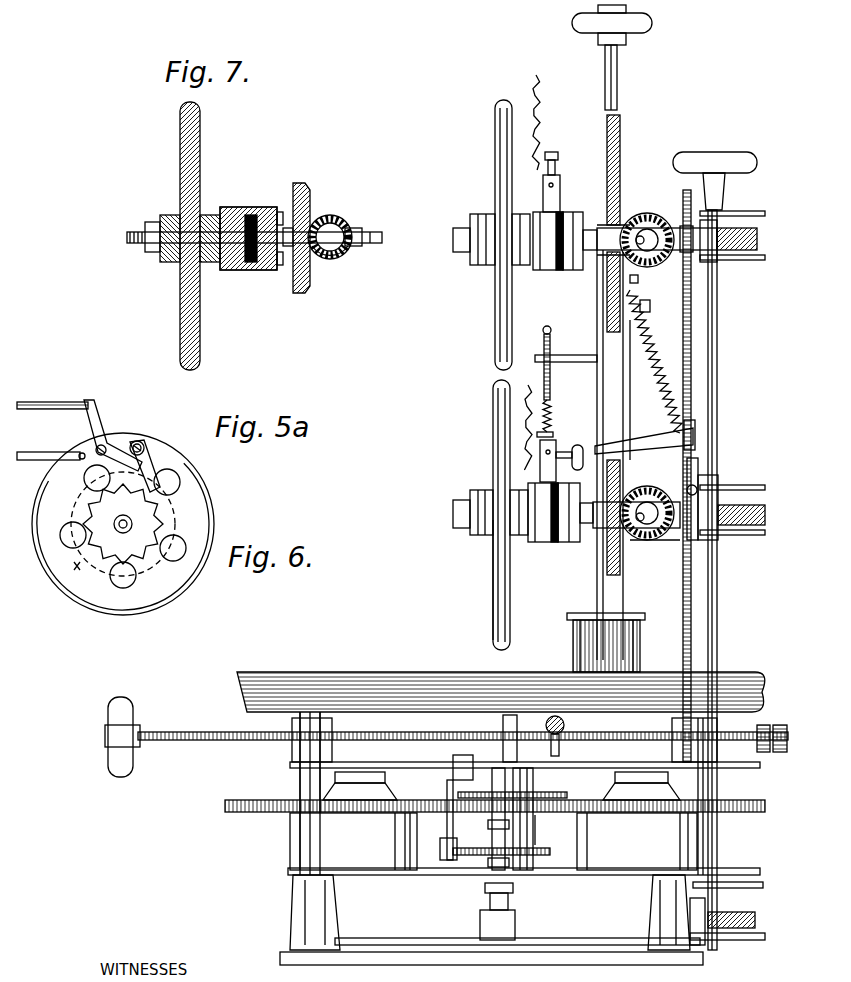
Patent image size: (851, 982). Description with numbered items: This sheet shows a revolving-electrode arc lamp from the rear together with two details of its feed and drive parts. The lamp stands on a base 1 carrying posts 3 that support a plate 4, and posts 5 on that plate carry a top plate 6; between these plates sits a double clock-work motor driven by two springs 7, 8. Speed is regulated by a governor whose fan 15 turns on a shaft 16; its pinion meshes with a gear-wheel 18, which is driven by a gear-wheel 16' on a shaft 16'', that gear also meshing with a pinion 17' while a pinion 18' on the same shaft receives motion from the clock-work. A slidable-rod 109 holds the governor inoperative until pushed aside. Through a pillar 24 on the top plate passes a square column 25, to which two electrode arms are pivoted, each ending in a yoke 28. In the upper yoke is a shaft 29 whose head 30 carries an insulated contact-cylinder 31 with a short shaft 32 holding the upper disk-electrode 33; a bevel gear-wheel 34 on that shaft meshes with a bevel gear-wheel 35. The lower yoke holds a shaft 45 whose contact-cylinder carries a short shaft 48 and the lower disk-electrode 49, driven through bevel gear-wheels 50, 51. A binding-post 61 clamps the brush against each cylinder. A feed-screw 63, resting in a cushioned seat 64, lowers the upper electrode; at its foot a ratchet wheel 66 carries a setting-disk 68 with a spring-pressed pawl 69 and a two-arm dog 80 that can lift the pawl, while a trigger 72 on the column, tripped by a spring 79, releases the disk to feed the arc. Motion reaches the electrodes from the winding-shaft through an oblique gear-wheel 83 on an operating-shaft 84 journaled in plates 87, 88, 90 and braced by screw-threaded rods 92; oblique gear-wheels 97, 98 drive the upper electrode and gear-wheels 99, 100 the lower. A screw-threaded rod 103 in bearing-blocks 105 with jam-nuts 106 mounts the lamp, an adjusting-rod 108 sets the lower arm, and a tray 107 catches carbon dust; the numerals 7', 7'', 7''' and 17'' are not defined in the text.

In FIG. 5A, the base 1 is at (386, 966).
In FIG. 5A, the posts 3 is at (335, 923).
In FIG. 5A, the plate 4 is at (290, 875).
In FIG. 5A, the posts 5 is at (300, 835).
In FIG. 5A, the top plate 6 is at (290, 766).
In FIG. 5A, the spring 7 is at (637, 841).
In FIG. 5A, the rack bar 7' is at (481, 797).
In FIG. 5A, the cone 7'' is at (516, 785).
In FIG. 5A, the pin 7''' is at (543, 747).
In FIG. 5A, the spring 8 is at (353, 841).
In FIG. 5A, the fan 15 is at (454, 845).
In FIG. 5A, the shaft 16 is at (463, 819).
In FIG. 5A, the gear-wheel 16' is at (524, 857).
In FIG. 5A, the shaft 16'' is at (538, 806).
In FIG. 5A, the pinion 17' is at (478, 758).
In FIG. 5A, the bracket 17'' is at (538, 830).
In FIG. 5A, the gear-wheel 18 is at (503, 851).
In FIG. 5A, the pinion 18' is at (529, 798).
In FIG. 5A, the pillar 24 is at (626, 664).
In FIG. 5A, the column 25 is at (622, 617).
In FIG. 7, the yoke 28 is at (288, 228).
In FIG. 7, the shaft 29 is at (333, 234).
In FIG. 5A, the shaft 29 is at (592, 226).
In FIG. 7, the head 30 is at (264, 271).
In FIG. 7, the contact-cylinder 31 is at (234, 271).
In FIG. 7, the short shaft 32 is at (190, 233).
In FIG. 7, the disk-electrode 33 is at (197, 142).
In FIG. 5A, the disk-electrode 33 is at (494, 296).
In FIG. 7, the bevel gear-wheel 34 is at (301, 290).
In FIG. 5A, the bevel gear-wheel 34 is at (611, 195).
In FIG. 7, the bevel gear-wheel 35 is at (337, 259).
In FIG. 5A, the bevel gear-wheel 35 is at (644, 212).
In FIG. 5A, the shaft 45 is at (588, 532).
In FIG. 5A, the short shaft 48 is at (460, 500).
In FIG. 5A, the disk-electrode 49 is at (496, 622).
In FIG. 5A, the bevel gear-wheel 50 is at (632, 560).
In FIG. 5A, the bevel gear-wheel 51 is at (700, 472).
In FIG. 6, the binding-post 61 is at (60, 406).
In FIG. 5A, the binding-post 61 is at (542, 468).
In FIG. 6, the feed-screw 63 is at (130, 531).
In FIG. 5A, the feed-screw 63 is at (605, 368).
In FIG. 6, the cushioned seat 64 is at (206, 531).
In FIG. 6, the ratchet wheel 66 is at (97, 528).
In FIG. 6, the setting-disk 68 is at (58, 478).
In FIG. 6, the spring-pressed pawl 69 is at (150, 460).
In FIG. 5A, the trigger 72 is at (637, 444).
In FIG. 5A, the spring 79 is at (647, 331).
In FIG. 6, the two-arm dog 80 is at (95, 432).
In FIG. 5A, the oblique gear-wheel 83 is at (756, 920).
In FIG. 5A, the operating-shaft 84 is at (717, 392).
In FIG. 5A, the plates 87 is at (764, 213).
In FIG. 5A, the plates 88 is at (765, 259).
In FIG. 5A, the plate 90 is at (740, 882).
In FIG. 5A, the screw-threaded rods 92 is at (700, 332).
In FIG. 5A, the oblique gear-wheel 97 is at (720, 204).
In FIG. 5A, the oblique gear-wheel 98 is at (758, 240).
In FIG. 5A, the oblique gear-wheel 99 is at (652, 556).
In FIG. 5A, the oblique gear-wheel 100 is at (765, 515).
In FIG. 5A, the screw-threaded rod 103 is at (180, 740).
In FIG. 5A, the bearing-blocks 105 is at (332, 750).
In FIG. 5A, the jam-nuts 106 is at (778, 724).
In FIG. 5A, the tray 107 is at (501, 679).
In FIG. 5A, the adjusting-rod 108 is at (600, 638).
In FIG. 5A, the slidable-rod 109 is at (455, 757).